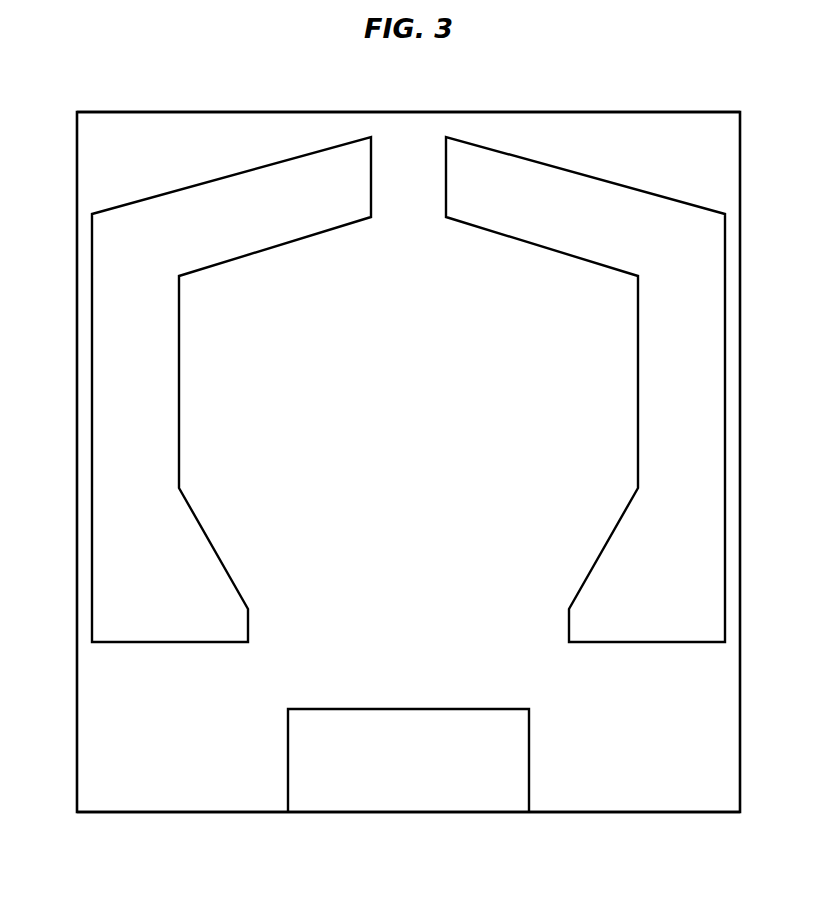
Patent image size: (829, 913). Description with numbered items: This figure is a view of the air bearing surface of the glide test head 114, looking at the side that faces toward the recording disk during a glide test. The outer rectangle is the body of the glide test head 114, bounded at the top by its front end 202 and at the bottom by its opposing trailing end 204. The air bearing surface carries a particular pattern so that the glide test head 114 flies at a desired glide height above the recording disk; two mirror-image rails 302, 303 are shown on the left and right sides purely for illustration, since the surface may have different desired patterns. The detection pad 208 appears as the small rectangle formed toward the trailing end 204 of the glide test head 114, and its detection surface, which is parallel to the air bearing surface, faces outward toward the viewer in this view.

The glide test head 114 is at (574, 74).
The front end 202 is at (191, 108).
The trailing end 204 is at (623, 818).
The detection pad 208 is at (432, 801).
The rail 302 is at (107, 343).
The rail 303 is at (708, 343).